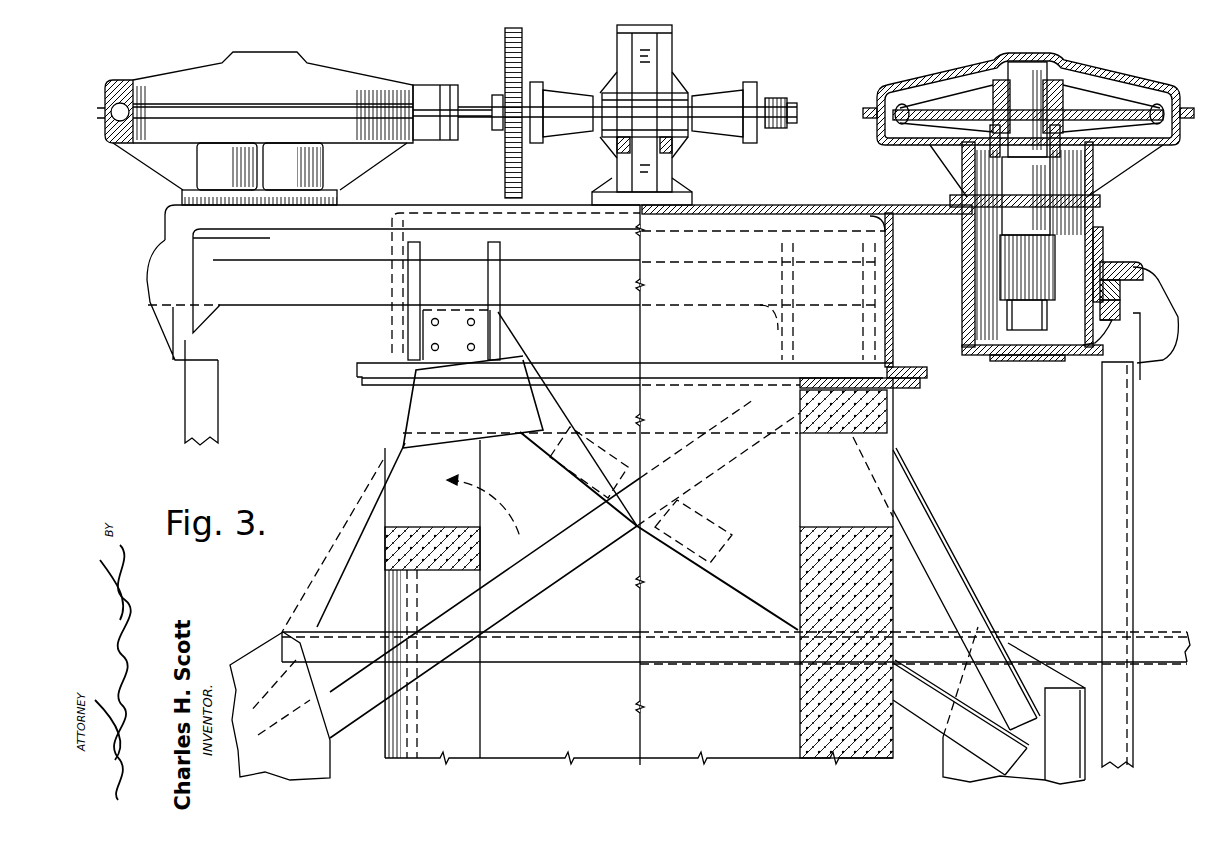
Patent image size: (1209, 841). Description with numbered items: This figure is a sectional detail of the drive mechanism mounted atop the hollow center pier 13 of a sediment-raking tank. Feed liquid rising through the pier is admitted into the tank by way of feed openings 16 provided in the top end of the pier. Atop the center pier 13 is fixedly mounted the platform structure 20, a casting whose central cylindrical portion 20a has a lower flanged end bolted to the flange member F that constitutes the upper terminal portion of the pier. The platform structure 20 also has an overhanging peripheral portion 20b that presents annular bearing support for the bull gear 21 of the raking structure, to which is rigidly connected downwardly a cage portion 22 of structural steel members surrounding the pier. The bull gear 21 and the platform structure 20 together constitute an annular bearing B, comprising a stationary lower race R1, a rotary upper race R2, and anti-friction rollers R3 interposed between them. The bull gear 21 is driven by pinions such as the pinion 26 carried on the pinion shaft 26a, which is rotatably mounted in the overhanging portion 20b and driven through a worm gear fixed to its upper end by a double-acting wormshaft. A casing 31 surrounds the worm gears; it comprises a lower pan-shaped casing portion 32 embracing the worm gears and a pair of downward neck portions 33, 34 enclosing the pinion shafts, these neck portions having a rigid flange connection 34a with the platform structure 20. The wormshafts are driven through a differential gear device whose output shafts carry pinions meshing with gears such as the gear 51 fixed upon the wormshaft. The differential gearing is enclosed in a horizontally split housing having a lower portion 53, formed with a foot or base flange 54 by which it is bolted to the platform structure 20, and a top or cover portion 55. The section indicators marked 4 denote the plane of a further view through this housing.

The gear 51 is at (600, 78).
The top or cover portion 55 is at (678, 82).
The lower portion 53 is at (672, 162).
The foot or base flange 54 is at (692, 196).
The section line 4- 4 is at (822, 132).
The casing 31 is at (878, 80).
The lower pan-shaped casing portion 32 is at (1153, 143).
The downward neck portion 33 is at (1045, 144).
The downward neck portion 34 is at (1093, 172).
The rigid flange connection 34a is at (965, 163).
The pinion shaft 26a is at (1012, 222).
The pinion 26 is at (978, 297).
The platform structure 20 is at (845, 203).
The central cylindrical portion 20a is at (895, 292).
The overhanging peripheral portion 20b is at (912, 218).
The flange member F is at (905, 388).
The bull gear 21 is at (1095, 255).
The rotary upper race R2 is at (1133, 268).
The annular bearing B is at (1112, 287).
The anti-friction rollers R3 is at (1112, 306).
The stationary lower race R1 is at (1105, 320).
The cage portion 22 is at (1137, 412).
The center pier 13 is at (885, 585).
The feed openings 16 is at (462, 461).